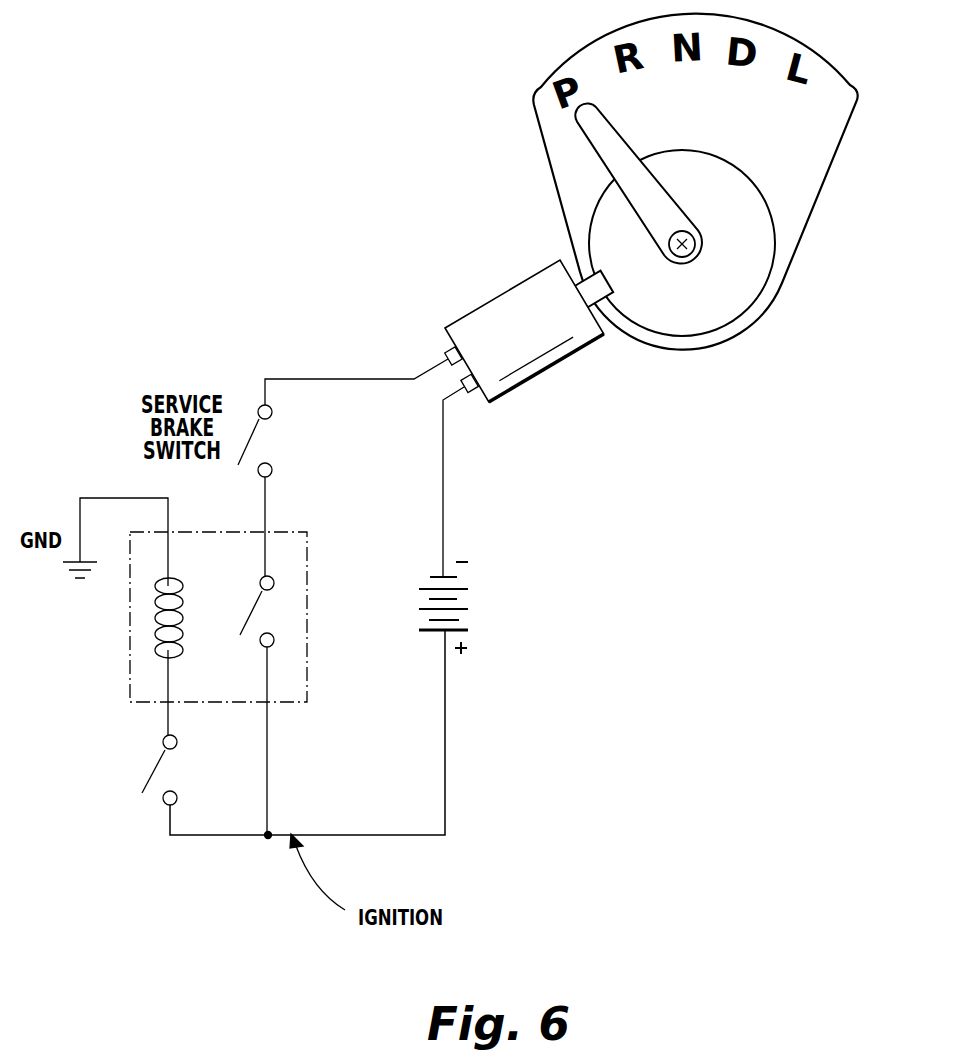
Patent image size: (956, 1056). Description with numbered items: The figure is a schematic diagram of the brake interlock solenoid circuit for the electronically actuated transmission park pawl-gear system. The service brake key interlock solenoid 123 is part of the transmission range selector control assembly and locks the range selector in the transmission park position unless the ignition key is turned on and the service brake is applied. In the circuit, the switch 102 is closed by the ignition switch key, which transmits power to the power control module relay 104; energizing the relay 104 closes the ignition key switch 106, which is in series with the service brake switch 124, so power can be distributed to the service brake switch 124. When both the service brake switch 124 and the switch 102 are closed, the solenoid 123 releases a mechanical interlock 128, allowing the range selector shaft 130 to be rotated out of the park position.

The switch 102 is at (158, 763).
The power control module relay 104 is at (153, 613).
The ignition key switch 106 is at (258, 605).
The service brake key interlock solenoid 123 is at (495, 300).
The service brake switch 124 is at (252, 438).
The mechanical interlock 128 is at (606, 305).
The range selector shaft 130 is at (700, 240).